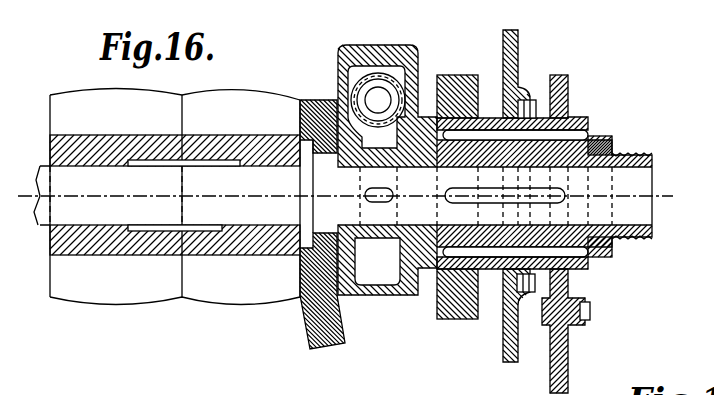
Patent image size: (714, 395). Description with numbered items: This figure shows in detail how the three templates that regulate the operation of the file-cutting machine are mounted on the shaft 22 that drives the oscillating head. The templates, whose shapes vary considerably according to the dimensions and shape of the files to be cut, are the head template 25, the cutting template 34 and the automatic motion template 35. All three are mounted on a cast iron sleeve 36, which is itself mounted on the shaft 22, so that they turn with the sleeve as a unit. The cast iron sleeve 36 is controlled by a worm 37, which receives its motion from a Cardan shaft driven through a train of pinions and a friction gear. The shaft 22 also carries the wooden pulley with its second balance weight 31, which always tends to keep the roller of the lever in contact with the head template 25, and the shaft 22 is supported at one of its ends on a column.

The shaft 22 is at (353, 193).
The head template 25 is at (449, 78).
The second balance weight 31 is at (511, 54).
The cutting template 34 is at (531, 95).
The automatic motion template 35 is at (569, 94).
The cast iron sleeve 36 is at (618, 152).
The worm 37 is at (379, 96).